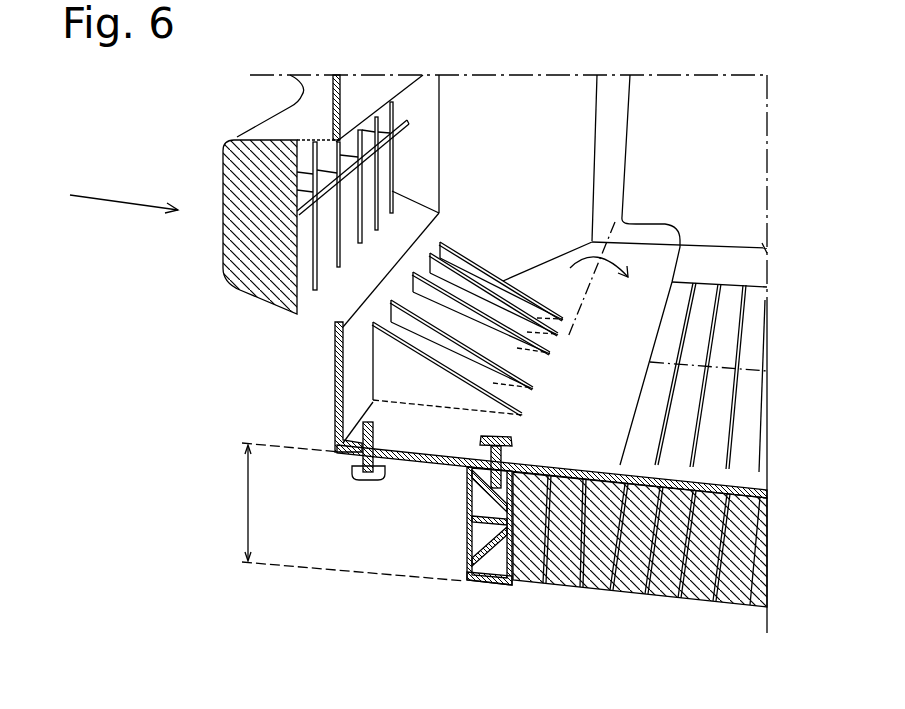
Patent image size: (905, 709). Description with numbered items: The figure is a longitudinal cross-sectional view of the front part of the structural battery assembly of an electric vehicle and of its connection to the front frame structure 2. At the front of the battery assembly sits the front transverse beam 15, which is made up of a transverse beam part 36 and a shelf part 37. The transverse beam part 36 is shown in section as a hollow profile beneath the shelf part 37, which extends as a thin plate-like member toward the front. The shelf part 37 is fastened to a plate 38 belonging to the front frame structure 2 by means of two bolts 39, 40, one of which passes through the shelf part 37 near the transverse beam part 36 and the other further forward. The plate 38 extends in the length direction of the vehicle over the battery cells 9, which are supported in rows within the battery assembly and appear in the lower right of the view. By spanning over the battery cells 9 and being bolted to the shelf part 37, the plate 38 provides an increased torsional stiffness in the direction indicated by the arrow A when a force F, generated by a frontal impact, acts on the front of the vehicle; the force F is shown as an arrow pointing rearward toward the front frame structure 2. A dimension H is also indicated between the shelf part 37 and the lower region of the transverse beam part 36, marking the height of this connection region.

The front frame structure 2 is at (309, 318).
The battery cells 9 is at (627, 578).
The front transverse beam 15 is at (497, 601).
The transverse beam part 36 is at (466, 568).
The shelf part 37 is at (424, 462).
The plate 38 is at (397, 424).
The bolt 39 is at (363, 474).
The bolt 40 is at (506, 440).
The height dimension H is at (246, 492).
The force F is at (108, 198).
The arrow A is at (588, 245).